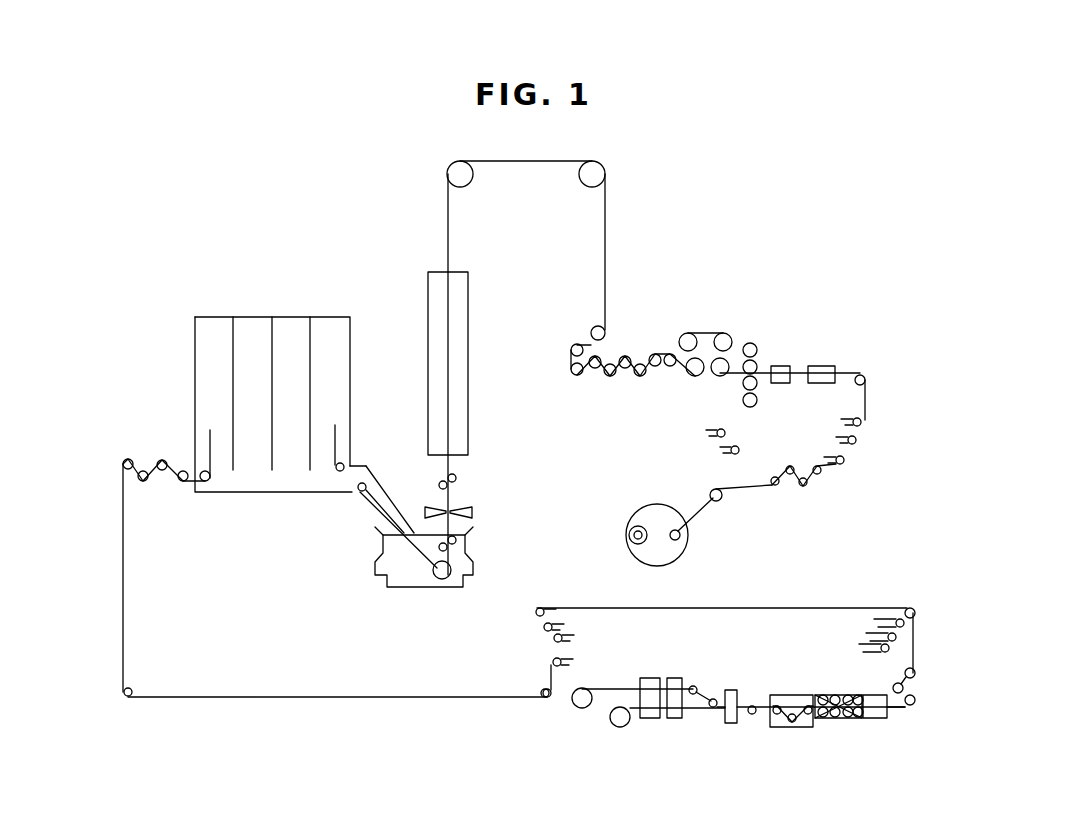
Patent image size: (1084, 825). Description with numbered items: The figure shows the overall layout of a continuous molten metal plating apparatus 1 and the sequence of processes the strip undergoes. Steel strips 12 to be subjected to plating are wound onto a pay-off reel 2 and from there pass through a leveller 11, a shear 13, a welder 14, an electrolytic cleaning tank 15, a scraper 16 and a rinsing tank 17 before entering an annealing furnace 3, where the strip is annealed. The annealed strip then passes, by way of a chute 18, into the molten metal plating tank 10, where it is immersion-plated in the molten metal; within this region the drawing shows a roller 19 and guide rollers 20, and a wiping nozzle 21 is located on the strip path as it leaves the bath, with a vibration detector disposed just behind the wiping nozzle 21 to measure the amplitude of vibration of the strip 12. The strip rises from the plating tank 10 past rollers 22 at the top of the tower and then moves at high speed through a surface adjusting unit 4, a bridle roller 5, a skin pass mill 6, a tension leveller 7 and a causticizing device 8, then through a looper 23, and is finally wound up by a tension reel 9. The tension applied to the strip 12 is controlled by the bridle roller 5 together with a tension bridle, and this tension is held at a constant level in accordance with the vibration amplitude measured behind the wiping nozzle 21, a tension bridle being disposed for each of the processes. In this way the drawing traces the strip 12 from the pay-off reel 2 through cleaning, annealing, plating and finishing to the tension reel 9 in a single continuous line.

The measuring apparatus 1 is at (771, 730).
The pay-off reel 2 is at (576, 708).
The annealing furnace 3 is at (253, 317).
The surface adjusting unit 4 is at (428, 290).
The bridle roller 5 is at (703, 333).
The skin pass mill 6 is at (742, 402).
The tension leveller 7 is at (780, 366).
The causticizing device 8 is at (822, 366).
The tension reel 9 is at (682, 552).
The molten metal plating tank 10 is at (378, 568).
The leveller 11 is at (648, 678).
The steel strip 12 is at (260, 697).
The shear 13 is at (678, 678).
The welder 14 is at (733, 690).
The electrolytic cleaning tank 15 is at (788, 695).
The scraper 16 is at (840, 718).
The rinsing tank 17 is at (877, 718).
The chute 18 is at (359, 497).
The roller 19 is at (484, 571).
The guide rollers 20 is at (486, 514).
The wiping nozzle 21 is at (475, 512).
The rollers 22 is at (447, 172).
The looper 23 is at (832, 473).